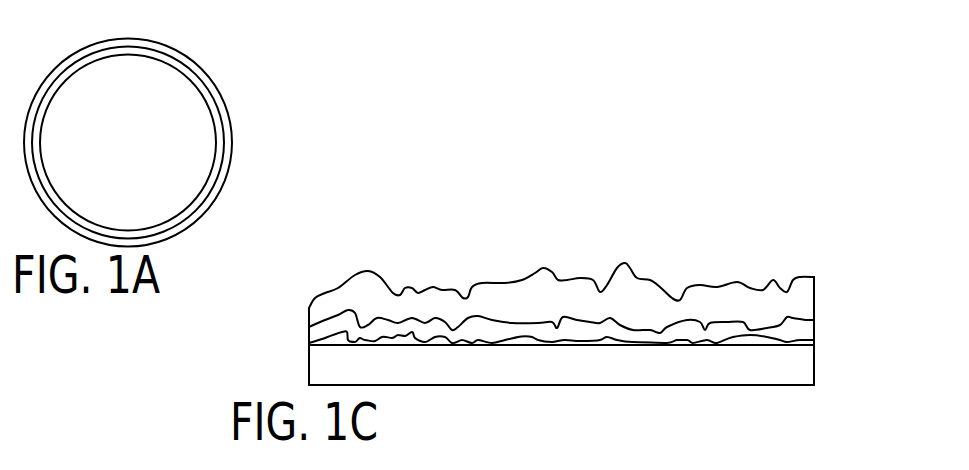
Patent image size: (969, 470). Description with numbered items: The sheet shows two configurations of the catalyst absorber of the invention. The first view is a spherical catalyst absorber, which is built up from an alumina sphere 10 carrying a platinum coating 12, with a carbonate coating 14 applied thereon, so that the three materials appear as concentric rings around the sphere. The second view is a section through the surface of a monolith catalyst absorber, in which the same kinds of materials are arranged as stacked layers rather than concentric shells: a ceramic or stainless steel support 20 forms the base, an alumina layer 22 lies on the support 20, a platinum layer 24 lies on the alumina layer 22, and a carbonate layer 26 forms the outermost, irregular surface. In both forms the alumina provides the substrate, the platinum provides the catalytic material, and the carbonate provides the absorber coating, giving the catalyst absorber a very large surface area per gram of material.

In FIG. 1A, the alumina sphere 10 is at (137, 165).
In FIG. 1A, the platinum coating 12 is at (213, 118).
In FIG. 1A, the carbonate coating 14 is at (150, 42).
In FIG. 1C, the ceramic or stainless steel support 20 is at (804, 370).
In FIG. 1C, the alumina layer 22 is at (522, 343).
In FIG. 1C, the platinum layer 24 is at (803, 327).
In FIG. 1C, the carbonate layer 26 is at (680, 302).